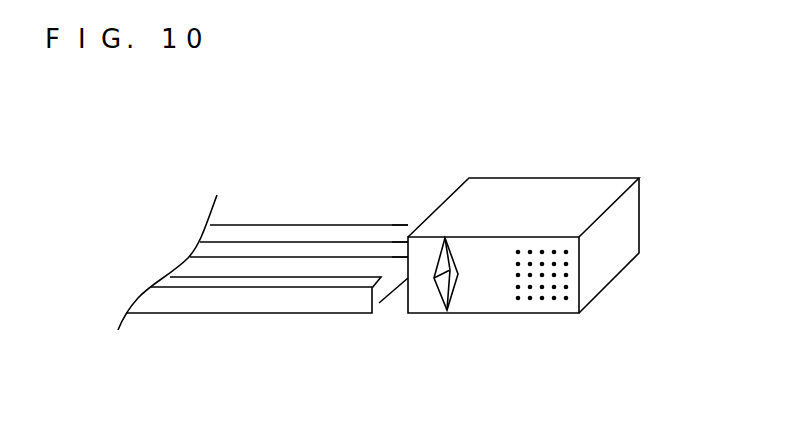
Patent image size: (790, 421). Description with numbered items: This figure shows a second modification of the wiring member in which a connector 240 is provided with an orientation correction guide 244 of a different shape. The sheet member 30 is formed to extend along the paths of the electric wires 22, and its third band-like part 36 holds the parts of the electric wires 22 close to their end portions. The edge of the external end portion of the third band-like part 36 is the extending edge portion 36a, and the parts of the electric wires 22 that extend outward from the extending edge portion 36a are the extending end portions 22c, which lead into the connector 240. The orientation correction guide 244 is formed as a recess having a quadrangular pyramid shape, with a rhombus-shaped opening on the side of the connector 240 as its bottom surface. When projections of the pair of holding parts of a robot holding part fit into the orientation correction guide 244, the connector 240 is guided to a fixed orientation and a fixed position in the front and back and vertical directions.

The sheet member 30 is at (188, 313).
The electric wires 22 is at (323, 220).
The extending end portions 22c is at (405, 220).
The third band-like part 36 is at (297, 313).
The extending edge portion 36a is at (380, 305).
The connector 240 is at (531, 179).
The orientation correction guide 244 is at (445, 238).